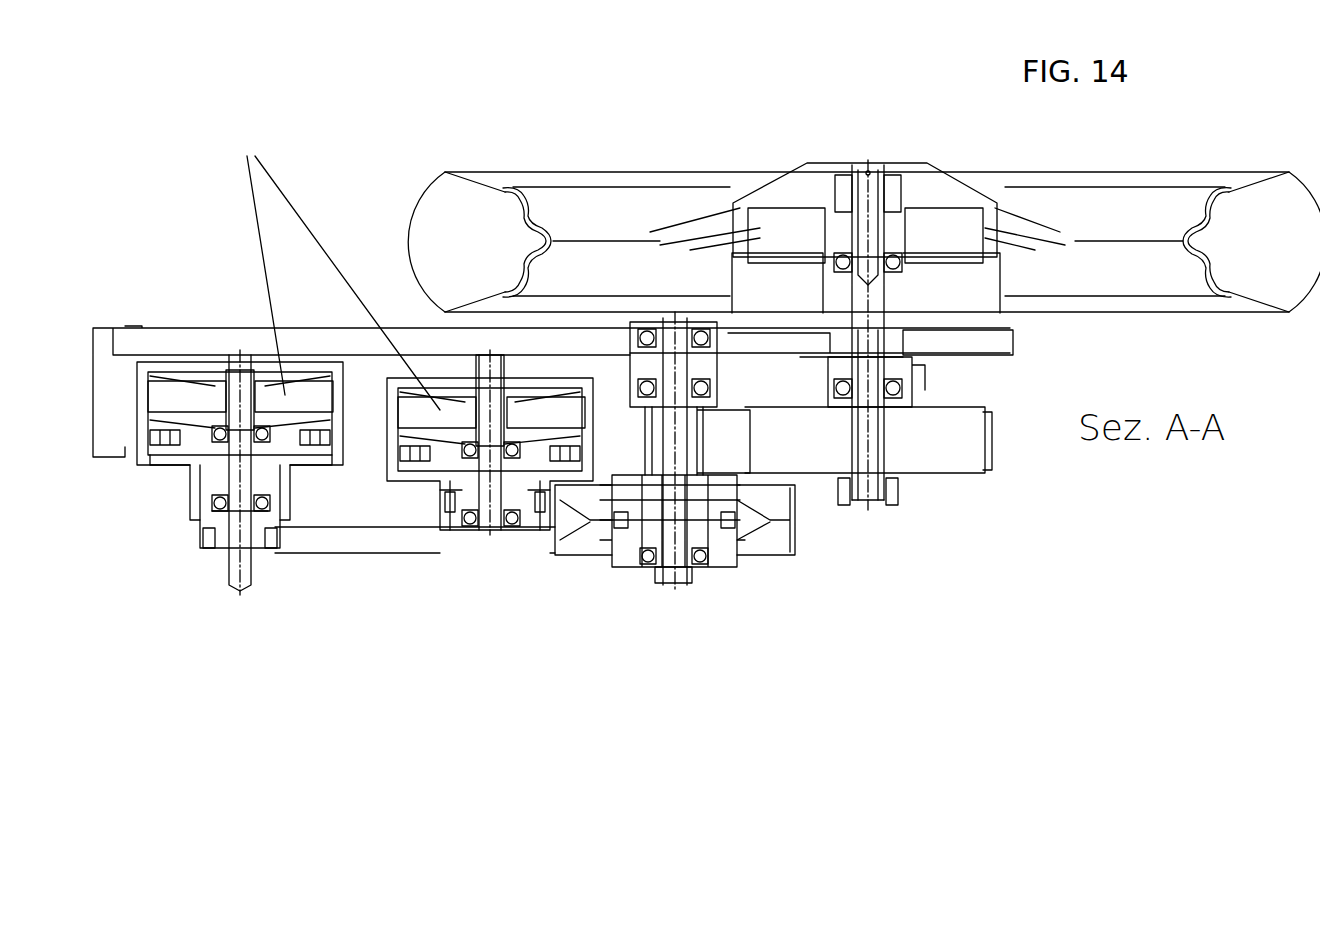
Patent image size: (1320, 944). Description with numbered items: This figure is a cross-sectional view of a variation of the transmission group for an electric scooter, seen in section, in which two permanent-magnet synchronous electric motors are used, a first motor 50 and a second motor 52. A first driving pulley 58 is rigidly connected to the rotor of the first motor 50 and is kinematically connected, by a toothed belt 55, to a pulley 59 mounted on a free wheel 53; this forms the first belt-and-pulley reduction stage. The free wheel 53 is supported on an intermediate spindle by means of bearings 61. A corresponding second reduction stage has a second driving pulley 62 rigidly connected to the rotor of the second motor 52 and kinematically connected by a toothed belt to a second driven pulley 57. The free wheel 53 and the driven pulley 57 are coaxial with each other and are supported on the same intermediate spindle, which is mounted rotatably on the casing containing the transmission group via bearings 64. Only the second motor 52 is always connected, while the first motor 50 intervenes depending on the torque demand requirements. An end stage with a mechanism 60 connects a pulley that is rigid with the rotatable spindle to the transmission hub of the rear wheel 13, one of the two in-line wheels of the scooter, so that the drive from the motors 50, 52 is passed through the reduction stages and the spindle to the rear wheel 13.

The rear wheel 13 is at (1230, 232).
The first motor 50 is at (185, 375).
The second motor 52 is at (435, 447).
The free wheel 53 is at (705, 530).
The toothed belt 55 is at (427, 533).
The second driven pulley 57 is at (770, 498).
The first driving pulley 58 is at (205, 555).
The pulley 59 is at (573, 540).
The mechanism 60 is at (920, 452).
The bearings 61 is at (648, 570).
The second driving pulley 62 is at (447, 503).
The bearings 64 is at (633, 333).